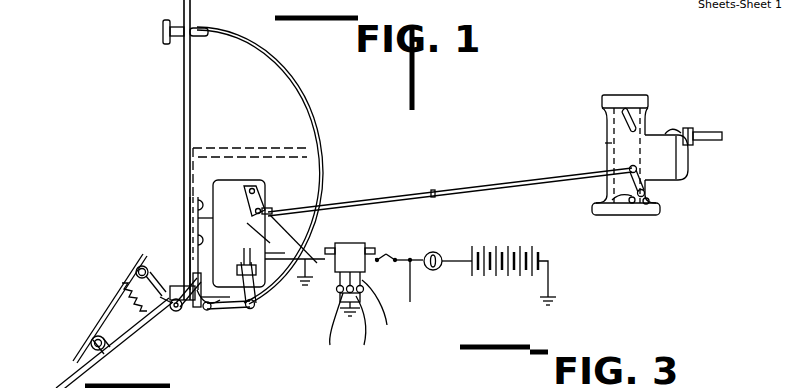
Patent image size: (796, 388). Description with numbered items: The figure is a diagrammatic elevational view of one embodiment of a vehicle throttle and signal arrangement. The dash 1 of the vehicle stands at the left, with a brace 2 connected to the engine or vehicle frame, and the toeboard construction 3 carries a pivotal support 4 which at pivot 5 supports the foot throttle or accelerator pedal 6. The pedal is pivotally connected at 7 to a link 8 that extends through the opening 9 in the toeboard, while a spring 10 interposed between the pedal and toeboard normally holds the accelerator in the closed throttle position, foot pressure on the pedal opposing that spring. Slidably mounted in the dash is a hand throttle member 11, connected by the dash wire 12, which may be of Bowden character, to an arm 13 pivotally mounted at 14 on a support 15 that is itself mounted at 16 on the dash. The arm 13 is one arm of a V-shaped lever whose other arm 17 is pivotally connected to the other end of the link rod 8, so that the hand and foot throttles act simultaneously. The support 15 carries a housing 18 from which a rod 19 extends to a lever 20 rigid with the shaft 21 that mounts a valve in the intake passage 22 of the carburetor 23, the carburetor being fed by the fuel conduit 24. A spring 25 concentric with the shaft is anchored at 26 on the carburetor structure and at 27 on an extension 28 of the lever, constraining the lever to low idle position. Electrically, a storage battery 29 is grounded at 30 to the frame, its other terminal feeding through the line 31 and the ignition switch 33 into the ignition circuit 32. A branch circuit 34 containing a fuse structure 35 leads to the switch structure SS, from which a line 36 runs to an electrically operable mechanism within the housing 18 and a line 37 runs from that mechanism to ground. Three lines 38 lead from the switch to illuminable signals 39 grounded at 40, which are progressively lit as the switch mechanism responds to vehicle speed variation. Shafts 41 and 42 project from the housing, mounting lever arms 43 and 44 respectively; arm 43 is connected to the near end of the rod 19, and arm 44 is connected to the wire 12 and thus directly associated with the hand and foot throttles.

The dash 1 is at (184, 72).
The brace 2 is at (212, 146).
The toeboard construction 3 is at (68, 386).
The pivotal support 4 is at (102, 351).
The pivot 5 is at (91, 343).
The accelerator pedal 6 is at (100, 318).
The pivotal connection 7 is at (146, 268).
The link 8 is at (176, 311).
The opening 9 is at (166, 308).
The spring 10 is at (123, 270).
The hand throttle member 11 is at (163, 19).
The dash wire 12 is at (286, 71).
The arm 13 is at (201, 313).
The pivot 14 is at (190, 262).
The support 15 is at (209, 212).
The mounting 16 is at (190, 215).
The arm 17 is at (188, 318).
The housing 18 is at (232, 196).
The rod 19 is at (437, 190).
The lever 20 is at (626, 176).
The shaft 21 is at (630, 214).
The intake passage 22 is at (605, 143).
The carburetor 23 is at (668, 163).
The conduit 24 is at (712, 132).
The spring 25 is at (620, 214).
The spring mounting 26 is at (607, 199).
The spring mounting 27 is at (642, 213).
The extension 28 is at (670, 178).
The storage battery 29 is at (500, 277).
The ground 30 is at (553, 297).
The line 31 is at (471, 259).
The ignition circuit 32 is at (410, 292).
The ignition switch 33 is at (440, 253).
The branch circuit 34 is at (403, 258).
The fuse structure 35 is at (389, 262).
The line 36 is at (332, 262).
The line 37 is at (277, 300).
The lines 38 is at (365, 293).
The illuminable signal 39 is at (338, 319).
The ground 40 is at (360, 330).
The shaft 41 is at (262, 193).
The shaft 42 is at (245, 265).
The lever arm 43 is at (250, 210).
The lever arm 44 is at (247, 312).